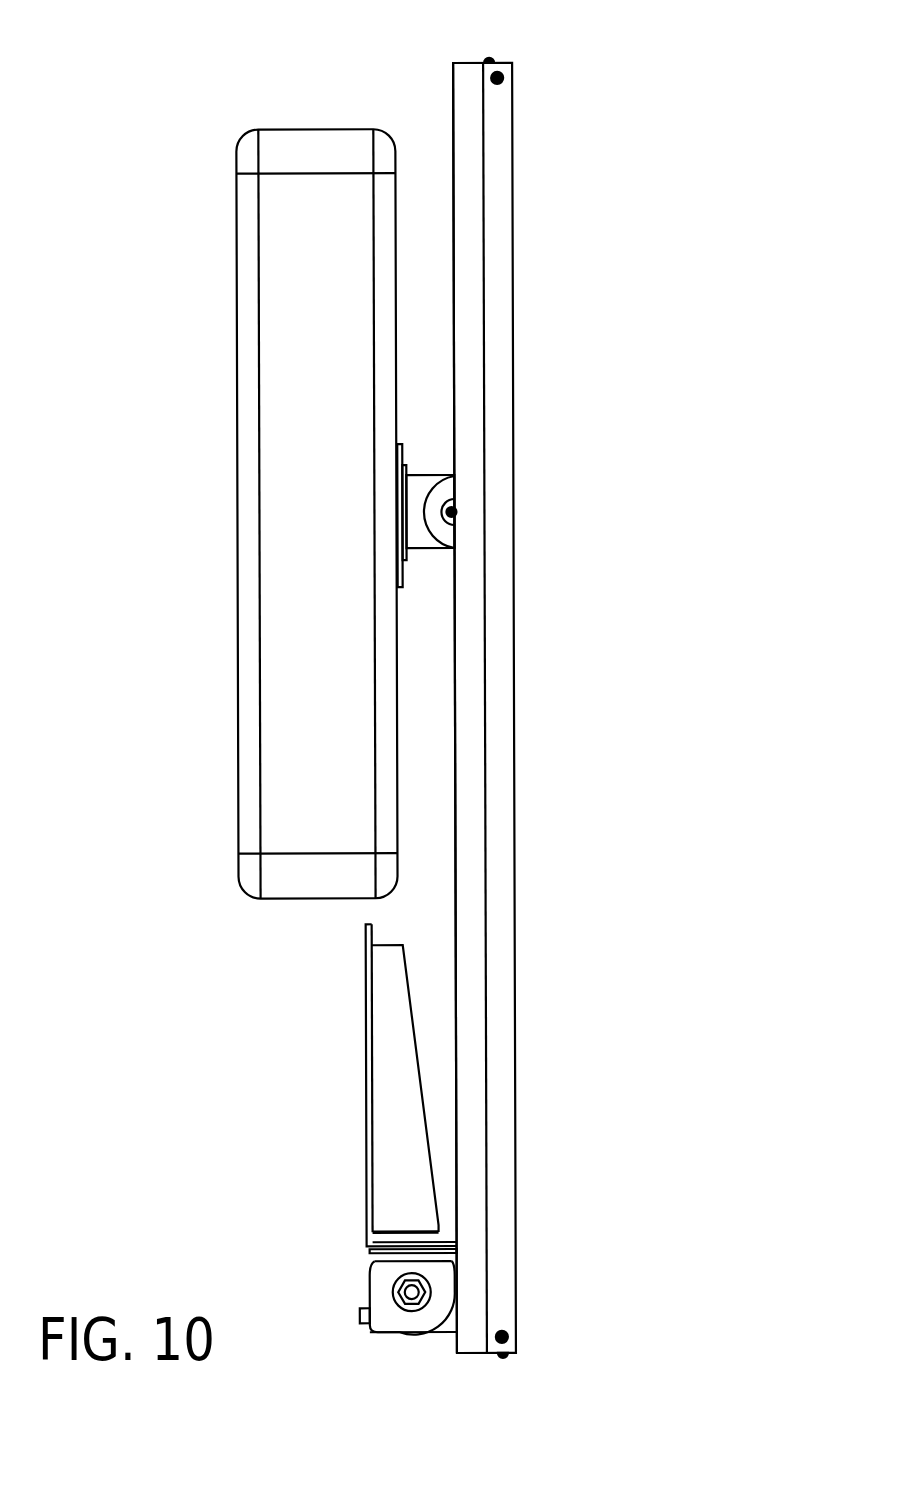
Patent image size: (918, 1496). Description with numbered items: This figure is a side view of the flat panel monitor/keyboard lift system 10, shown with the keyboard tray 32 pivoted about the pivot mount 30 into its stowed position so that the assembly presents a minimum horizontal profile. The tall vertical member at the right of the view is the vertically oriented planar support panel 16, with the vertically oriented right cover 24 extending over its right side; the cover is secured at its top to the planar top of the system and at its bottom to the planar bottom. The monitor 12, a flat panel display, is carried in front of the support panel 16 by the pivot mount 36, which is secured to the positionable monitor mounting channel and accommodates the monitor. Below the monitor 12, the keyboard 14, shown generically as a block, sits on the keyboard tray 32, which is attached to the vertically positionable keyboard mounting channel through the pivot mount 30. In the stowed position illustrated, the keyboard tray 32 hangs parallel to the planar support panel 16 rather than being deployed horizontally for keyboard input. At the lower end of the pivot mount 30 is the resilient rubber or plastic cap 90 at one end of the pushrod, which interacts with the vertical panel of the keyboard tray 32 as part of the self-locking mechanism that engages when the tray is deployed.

The vertical lift system 10 is at (553, 75).
The monitor 12 is at (292, 243).
The keyboard 14 is at (398, 1043).
The planar support panel 16 is at (518, 708).
The right cover 24 is at (437, 708).
The pivot mount 30 is at (350, 1296).
The keyboard tray 32 is at (365, 1083).
The pivot mount 36 is at (422, 432).
The resilient cap 90 is at (325, 1329).